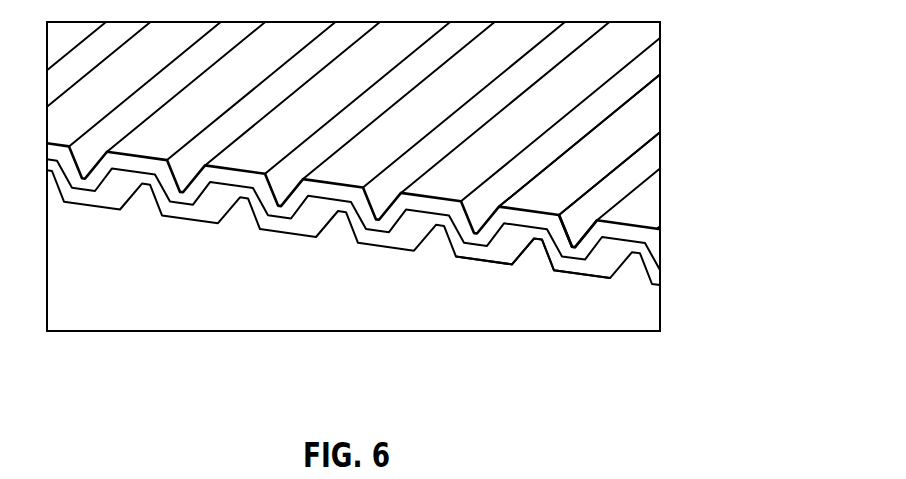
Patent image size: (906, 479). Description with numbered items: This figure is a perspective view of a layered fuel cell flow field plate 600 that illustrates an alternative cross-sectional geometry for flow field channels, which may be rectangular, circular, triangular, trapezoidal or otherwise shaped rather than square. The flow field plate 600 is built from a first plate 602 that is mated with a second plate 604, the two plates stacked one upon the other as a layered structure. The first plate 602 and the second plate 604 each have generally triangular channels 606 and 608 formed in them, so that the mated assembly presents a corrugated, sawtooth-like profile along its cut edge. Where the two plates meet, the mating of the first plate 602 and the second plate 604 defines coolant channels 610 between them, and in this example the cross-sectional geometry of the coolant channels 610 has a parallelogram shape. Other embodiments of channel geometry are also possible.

The layered fuel cell flow field plate 600 is at (617, 145).
The coolant channels 610 is at (522, 214).
The triangular channels of the first plate 606 is at (573, 226).
The first plate 602 is at (622, 228).
The second plate 604 is at (632, 251).
The triangular channels of the second plate 608 is at (536, 255).